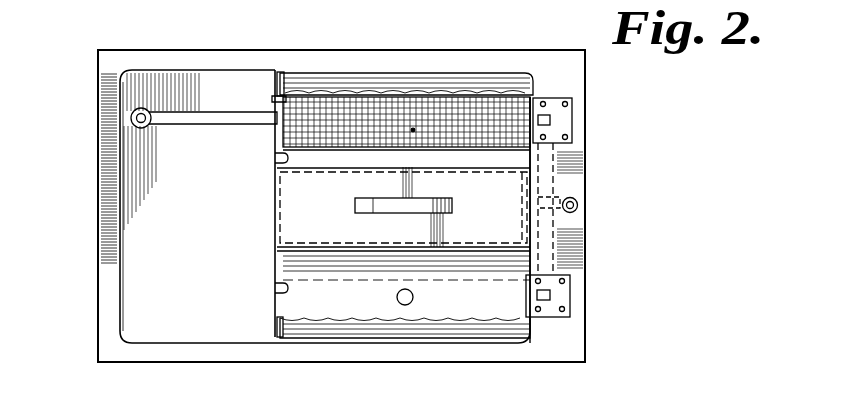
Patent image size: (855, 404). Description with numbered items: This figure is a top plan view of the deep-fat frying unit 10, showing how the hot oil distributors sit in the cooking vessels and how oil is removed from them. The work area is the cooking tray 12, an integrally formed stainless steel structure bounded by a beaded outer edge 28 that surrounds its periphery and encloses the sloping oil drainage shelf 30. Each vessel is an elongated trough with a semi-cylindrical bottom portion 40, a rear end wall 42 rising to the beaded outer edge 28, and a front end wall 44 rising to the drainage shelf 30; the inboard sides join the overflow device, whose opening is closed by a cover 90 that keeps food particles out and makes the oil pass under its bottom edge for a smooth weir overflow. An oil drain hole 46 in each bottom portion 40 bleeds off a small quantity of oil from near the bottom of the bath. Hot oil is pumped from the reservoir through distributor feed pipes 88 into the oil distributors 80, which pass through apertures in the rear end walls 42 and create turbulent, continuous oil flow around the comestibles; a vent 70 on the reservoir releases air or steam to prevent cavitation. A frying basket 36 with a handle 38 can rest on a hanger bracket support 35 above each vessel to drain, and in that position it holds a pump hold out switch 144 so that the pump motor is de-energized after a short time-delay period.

The deep-fat frying unit 10 is at (93, 220).
The cooking tray 12 is at (388, 53).
The beaded outer edge 28 is at (115, 57).
The sloping oil drainage shelf 30 is at (198, 328).
The hanger bracket support 35 is at (533, 94).
The frying basket 36 is at (275, 128).
The handle 38 is at (178, 125).
The semi-cylindrical bottom portion 40 is at (326, 157).
The rear end wall 42 is at (528, 157).
The front end wall 44 is at (274, 164).
The oil drain hole 46 is at (403, 112).
The vent 70 is at (580, 205).
The oil distributor 80 is at (440, 83).
The distributor feed pipe 88 is at (583, 166).
The cover 90 is at (478, 218).
The pump hold out switch 144 is at (548, 118).